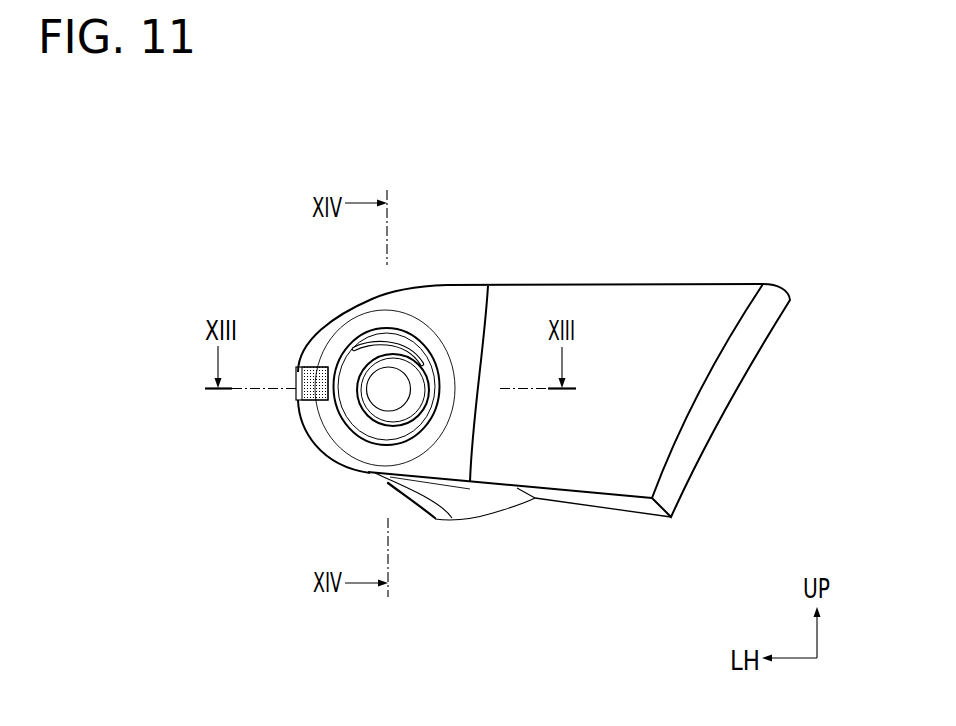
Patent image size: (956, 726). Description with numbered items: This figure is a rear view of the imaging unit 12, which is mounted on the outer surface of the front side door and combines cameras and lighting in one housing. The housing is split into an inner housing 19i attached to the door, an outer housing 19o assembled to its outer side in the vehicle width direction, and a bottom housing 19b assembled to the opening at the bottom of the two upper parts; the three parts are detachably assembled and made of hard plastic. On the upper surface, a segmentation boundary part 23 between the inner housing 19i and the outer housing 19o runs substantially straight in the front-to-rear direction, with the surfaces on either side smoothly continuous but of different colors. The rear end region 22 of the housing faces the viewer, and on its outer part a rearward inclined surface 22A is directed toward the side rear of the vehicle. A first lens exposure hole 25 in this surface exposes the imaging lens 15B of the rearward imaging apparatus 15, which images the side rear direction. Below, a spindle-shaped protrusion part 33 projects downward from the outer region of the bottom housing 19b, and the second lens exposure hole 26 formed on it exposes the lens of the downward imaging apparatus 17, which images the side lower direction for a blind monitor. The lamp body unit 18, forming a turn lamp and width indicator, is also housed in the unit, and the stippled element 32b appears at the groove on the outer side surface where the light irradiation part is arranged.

The imaging unit 12 is at (690, 257).
The rearward inclined surface 22A is at (376, 296).
The lamp body unit 18 is at (288, 397).
The reflector portion (30 reflector) 32b is at (297, 372).
The outer housing 19o is at (449, 299).
The segmentation boundary part 23 is at (470, 300).
The inner housing 19i is at (615, 293).
The rear end region 22 is at (630, 403).
The bottom housing 19b is at (556, 496).
The downward imaging apparatus 17 is at (414, 528).
The second lens exposure hole 26 is at (433, 520).
The protrusion part 33 is at (467, 511).
The first lens exposure hole 25 is at (341, 351).
The rearward imaging apparatus 15 is at (358, 413).
The imaging lens 15B is at (388, 403).